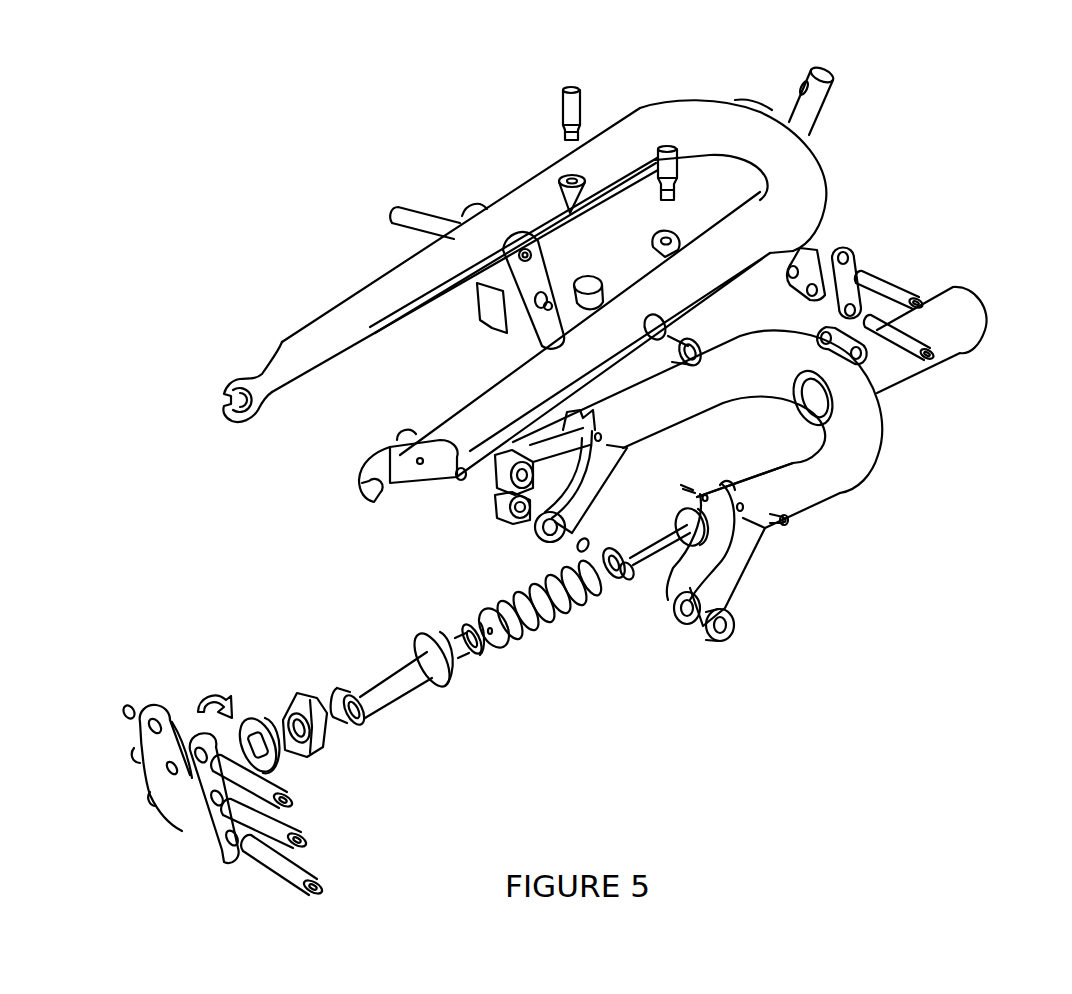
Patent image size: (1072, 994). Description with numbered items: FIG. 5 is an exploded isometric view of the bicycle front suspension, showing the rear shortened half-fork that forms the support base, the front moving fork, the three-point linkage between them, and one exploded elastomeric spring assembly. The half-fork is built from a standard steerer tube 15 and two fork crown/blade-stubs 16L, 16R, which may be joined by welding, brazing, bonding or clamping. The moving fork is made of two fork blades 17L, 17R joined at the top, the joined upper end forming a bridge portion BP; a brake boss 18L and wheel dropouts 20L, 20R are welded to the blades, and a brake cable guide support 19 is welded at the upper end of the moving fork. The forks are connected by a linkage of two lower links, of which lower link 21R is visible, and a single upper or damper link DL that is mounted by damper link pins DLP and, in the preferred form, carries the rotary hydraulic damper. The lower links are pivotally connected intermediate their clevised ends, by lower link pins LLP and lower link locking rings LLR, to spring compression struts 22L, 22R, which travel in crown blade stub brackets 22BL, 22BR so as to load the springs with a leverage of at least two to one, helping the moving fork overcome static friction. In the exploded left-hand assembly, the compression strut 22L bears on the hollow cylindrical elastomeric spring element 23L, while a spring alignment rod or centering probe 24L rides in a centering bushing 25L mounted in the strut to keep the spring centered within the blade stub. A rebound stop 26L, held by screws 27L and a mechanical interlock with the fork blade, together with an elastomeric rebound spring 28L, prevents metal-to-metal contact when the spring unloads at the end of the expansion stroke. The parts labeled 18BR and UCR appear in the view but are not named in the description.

The steerer tube 15 is at (953, 330).
The fork crown/blade-stub 16R is at (753, 362).
The fork crown/blade-stub 16L is at (847, 447).
The fork blade 17R is at (700, 105).
The fork blade 17L is at (788, 170).
The brake boss 18L is at (680, 148).
The right bolt with bushing 18BR is at (562, 190).
The brake cable guide support 19 is at (828, 70).
The bridge portion BP is at (752, 107).
The upper cross bracket UCR is at (810, 247).
The upper link DL is at (857, 232).
The damper link pins DLP is at (910, 338).
The wheel dropout 20R is at (240, 380).
The wheel dropout 20L is at (368, 500).
The lower link 21R is at (497, 297).
The spring compression strut 22R is at (543, 455).
The crown blade stub bracket 22BR is at (587, 497).
The crown blade stub bracket 22BL is at (737, 575).
The spring compression strut 22L is at (393, 700).
The spring element 23L is at (524, 638).
The spring alignment rod 24L is at (618, 585).
The centering bushing 25L is at (467, 657).
The rebound stop 26L is at (275, 770).
The screw 27L is at (790, 521).
The rebound spring 28L is at (325, 750).
The lower link locking rings LLR is at (150, 797).
The lower link pins LLP is at (263, 862).